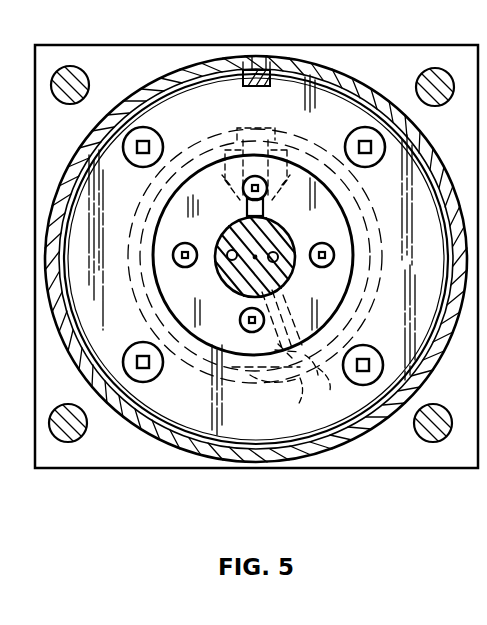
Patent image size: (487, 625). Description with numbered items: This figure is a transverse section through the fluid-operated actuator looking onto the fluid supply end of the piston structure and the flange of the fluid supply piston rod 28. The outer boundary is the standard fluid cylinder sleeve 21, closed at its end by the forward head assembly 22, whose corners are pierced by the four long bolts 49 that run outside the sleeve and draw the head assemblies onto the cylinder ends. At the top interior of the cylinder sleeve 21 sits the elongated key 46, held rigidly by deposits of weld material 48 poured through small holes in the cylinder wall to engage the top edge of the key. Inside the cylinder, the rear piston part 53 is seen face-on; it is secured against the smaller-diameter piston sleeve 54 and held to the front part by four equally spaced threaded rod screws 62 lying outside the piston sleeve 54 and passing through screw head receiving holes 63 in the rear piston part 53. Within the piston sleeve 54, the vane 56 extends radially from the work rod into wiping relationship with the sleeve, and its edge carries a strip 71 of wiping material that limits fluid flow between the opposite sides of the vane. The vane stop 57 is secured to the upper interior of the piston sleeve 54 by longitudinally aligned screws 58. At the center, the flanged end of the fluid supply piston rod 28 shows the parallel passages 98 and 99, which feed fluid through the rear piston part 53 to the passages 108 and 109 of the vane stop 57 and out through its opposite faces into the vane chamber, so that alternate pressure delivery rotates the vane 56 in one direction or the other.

The fluid cylinder sleeve 21 is at (172, 433).
The forward head assembly 22 is at (78, 457).
The fluid supply piston rod 28 is at (272, 246).
The elongated key 46 is at (273, 60).
The weld material 48 is at (257, 62).
The long bolts 49 is at (71, 80).
The rear piston part 53 is at (302, 420).
The piston sleeve 54 is at (323, 378).
The vane 56 is at (272, 388).
The vane stop 57 is at (242, 195).
The screws 58 is at (268, 125).
The threaded rod screws 62 is at (268, 200).
The screw head receiving holes 63 is at (153, 133).
The strip of wiping material 71 is at (300, 395).
The passage 98 is at (228, 260).
The passage 99 is at (246, 296).
The vane stop passage 108 is at (220, 145).
The vane stop passage 109 is at (279, 141).